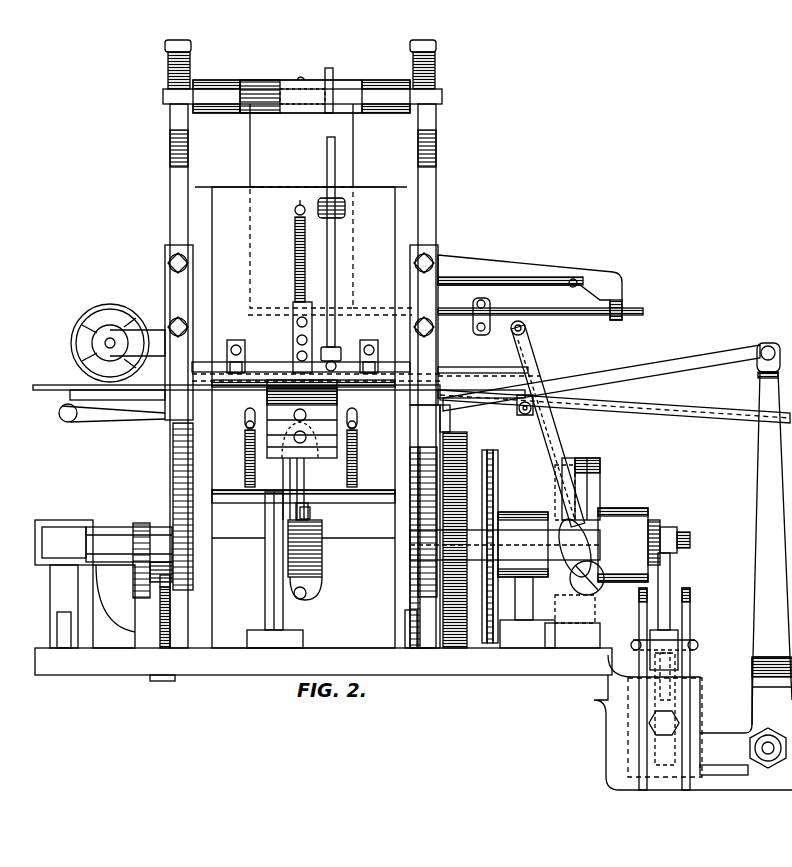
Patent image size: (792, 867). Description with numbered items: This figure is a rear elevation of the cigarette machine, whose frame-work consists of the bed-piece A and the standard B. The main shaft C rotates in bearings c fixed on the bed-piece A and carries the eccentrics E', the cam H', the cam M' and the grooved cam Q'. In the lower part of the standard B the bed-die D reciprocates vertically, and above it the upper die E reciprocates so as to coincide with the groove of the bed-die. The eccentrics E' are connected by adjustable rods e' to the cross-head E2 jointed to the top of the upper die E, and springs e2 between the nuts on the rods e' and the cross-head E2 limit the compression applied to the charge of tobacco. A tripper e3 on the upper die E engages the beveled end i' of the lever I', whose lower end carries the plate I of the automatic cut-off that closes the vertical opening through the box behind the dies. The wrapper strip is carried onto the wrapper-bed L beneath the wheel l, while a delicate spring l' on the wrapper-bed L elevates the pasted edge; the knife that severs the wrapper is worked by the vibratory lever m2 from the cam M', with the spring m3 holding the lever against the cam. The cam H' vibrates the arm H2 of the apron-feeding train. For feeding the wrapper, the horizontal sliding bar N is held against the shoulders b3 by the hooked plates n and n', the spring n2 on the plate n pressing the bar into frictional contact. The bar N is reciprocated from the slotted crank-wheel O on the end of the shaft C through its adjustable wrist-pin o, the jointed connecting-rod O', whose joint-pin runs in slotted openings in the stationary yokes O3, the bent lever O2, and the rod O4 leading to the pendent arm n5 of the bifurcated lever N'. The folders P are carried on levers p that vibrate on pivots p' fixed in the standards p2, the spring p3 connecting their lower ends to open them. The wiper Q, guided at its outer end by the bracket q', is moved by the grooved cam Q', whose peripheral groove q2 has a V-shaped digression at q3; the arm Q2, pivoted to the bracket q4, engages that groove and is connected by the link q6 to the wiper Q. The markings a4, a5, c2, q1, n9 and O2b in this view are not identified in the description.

The bed-piece A is at (413, 719).
The cross-head E2 is at (230, 110).
The springs e2 is at (168, 75).
The tripper e3 is at (329, 80).
The upper die E is at (303, 376).
The adjustable rods e' is at (301, 332).
The beveled end of lever i' is at (334, 254).
The lever I' is at (343, 255).
The spring n2 is at (290, 251).
The hooked plate n is at (302, 338).
The plate I is at (301, 358).
The shoulders b3 is at (303, 355).
The hooked plate n' is at (302, 367).
The wrapper-bed L is at (236, 378).
The wheel l is at (112, 343).
The spring l' is at (106, 406).
The folders P is at (325, 393).
The pins a5 is at (302, 419).
The springs a4 is at (365, 448).
The standard B is at (303, 498).
The bed-die D is at (300, 488).
The levers p is at (309, 524).
The pivots p' is at (320, 513).
The standards p2 is at (272, 542).
The spring p3 is at (306, 596).
The bearings c is at (85, 584).
The main shaft C is at (112, 535).
The cam M' is at (142, 548).
The eccentrics E' is at (293, 514).
The vibratory lever m2 is at (170, 585).
The spring m3 is at (170, 605).
The arm H2 is at (440, 418).
The cam H' is at (422, 526).
The wrist-pin o is at (690, 540).
The bearing c2 is at (527, 612).
The grooved cam Q' is at (554, 453).
The V-shaped digression of groove q3 is at (597, 520).
The bracket q4 is at (572, 621).
The peripheral groove q2 is at (577, 479).
The wiper Q is at (540, 324).
The guide block q1 is at (472, 316).
The link q6 is at (508, 326).
The bracket q' is at (540, 287).
The horizontal sliding bar N is at (483, 361).
The bifurcated lever N' is at (489, 386).
The pendent arm n5 is at (516, 395).
The rod n9 is at (603, 409).
The rod O4 is at (611, 377).
The slotted crank-wheel O is at (711, 548).
The pivot bolt O2b is at (755, 725).
The jointed connecting-rod O' is at (671, 659).
The bent lever O2 is at (639, 606).
The stationary yokes O3 is at (690, 608).
The arm Q2 is at (698, 645).